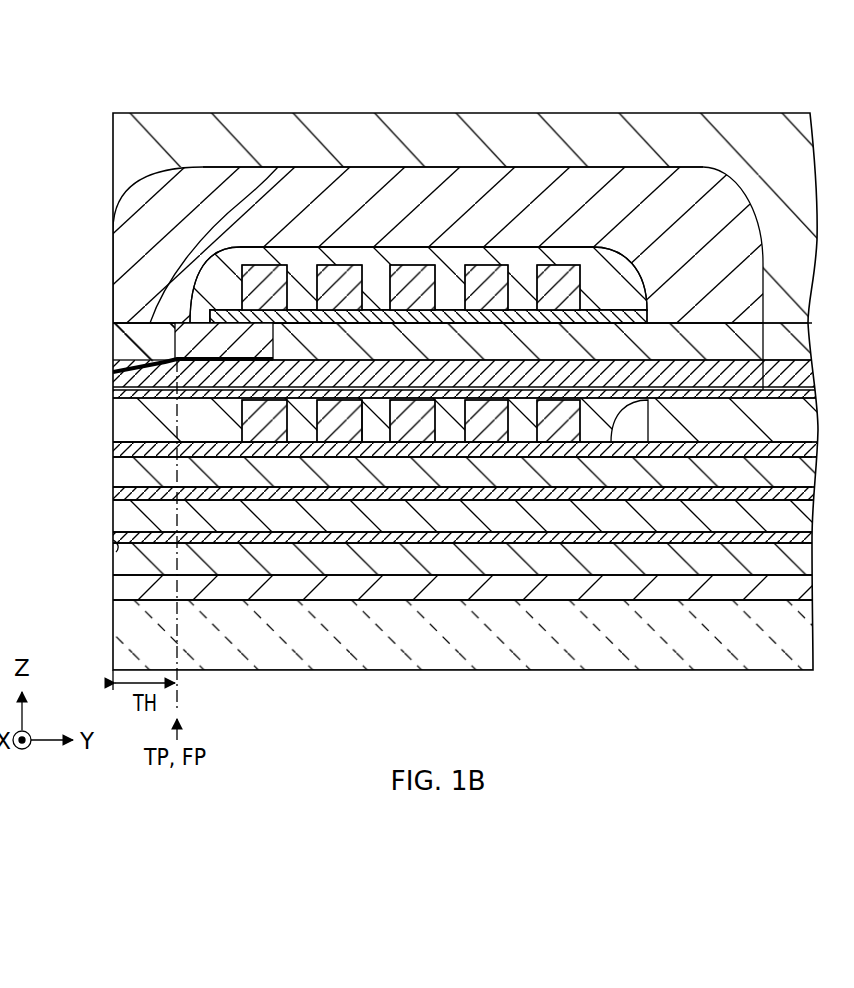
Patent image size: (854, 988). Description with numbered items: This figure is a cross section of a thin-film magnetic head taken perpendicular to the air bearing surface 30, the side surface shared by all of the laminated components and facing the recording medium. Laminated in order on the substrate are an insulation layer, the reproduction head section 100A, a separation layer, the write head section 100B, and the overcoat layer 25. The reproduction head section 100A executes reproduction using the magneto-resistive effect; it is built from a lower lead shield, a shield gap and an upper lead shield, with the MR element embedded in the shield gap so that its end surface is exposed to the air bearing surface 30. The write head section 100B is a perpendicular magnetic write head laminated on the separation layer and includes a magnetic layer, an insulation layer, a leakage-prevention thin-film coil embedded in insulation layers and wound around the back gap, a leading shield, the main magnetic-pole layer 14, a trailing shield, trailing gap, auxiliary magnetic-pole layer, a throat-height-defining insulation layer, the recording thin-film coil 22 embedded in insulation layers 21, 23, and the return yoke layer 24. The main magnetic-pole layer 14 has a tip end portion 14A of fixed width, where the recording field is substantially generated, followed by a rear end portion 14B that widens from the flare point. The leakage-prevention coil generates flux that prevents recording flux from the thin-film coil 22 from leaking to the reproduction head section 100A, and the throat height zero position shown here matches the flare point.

The main magnetic-pole layer 14 is at (411, 161).
The tip end portion 14A is at (266, 247).
The rear end portion 14B is at (337, 263).
The insulation layer 21 is at (553, 300).
The thin-film coil 22 is at (490, 262).
The insulation layer 23 is at (600, 275).
The return yoke layer 24 is at (215, 193).
The overcoat layer 25 is at (772, 126).
The air bearing surface 30 is at (108, 165).
The reproduction head section 100A is at (88, 498).
The write head section 100B is at (88, 230).